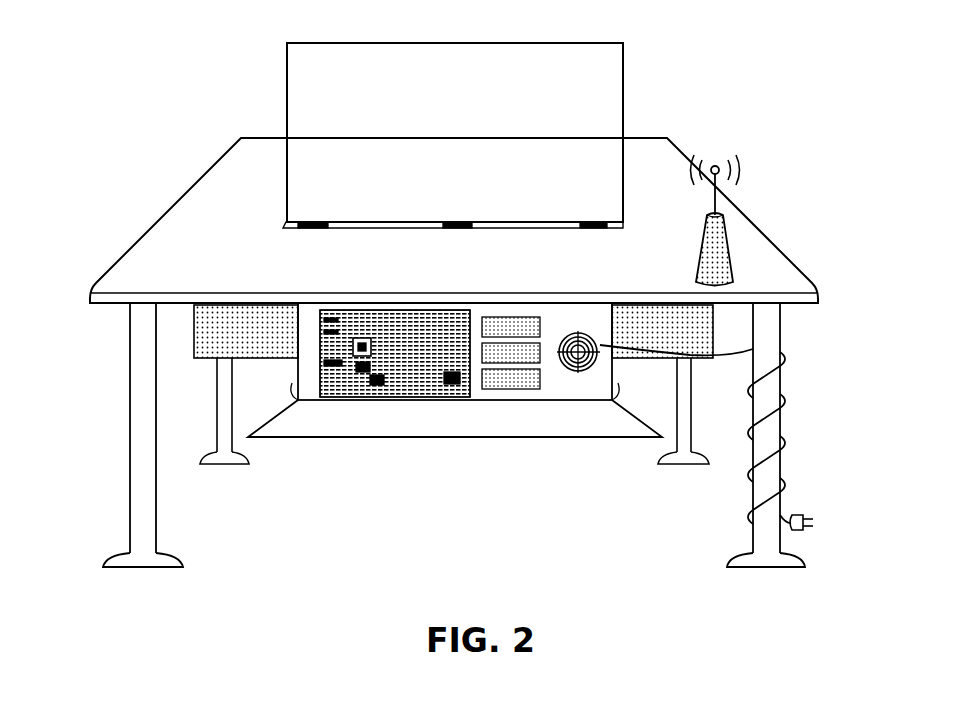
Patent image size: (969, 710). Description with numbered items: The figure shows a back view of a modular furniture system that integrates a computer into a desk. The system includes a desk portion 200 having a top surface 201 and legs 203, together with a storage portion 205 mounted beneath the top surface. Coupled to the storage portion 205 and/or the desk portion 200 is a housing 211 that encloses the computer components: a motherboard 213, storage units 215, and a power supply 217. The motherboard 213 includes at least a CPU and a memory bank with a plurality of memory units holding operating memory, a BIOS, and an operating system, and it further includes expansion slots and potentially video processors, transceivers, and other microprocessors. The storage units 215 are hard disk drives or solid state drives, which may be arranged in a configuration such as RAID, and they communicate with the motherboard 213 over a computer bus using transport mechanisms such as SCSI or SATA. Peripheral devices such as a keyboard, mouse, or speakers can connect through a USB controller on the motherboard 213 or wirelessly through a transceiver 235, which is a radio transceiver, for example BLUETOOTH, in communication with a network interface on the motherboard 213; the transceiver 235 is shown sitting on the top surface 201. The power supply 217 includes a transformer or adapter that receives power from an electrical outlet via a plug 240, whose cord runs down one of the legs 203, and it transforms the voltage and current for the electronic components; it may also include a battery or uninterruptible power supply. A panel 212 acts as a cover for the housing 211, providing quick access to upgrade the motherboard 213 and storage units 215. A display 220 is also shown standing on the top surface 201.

The desk portion 200 is at (454, 220).
The top surface 201 is at (361, 198).
The legs 203 is at (410, 435).
The storage portion 205 is at (374, 339).
The housing 211 is at (327, 365).
The panel 212 is at (455, 462).
The motherboard 213 is at (395, 411).
The storage units 215 is at (548, 414).
The power supply 217 is at (610, 407).
The display monitor 220 is at (409, 135).
The transceiver 235 is at (756, 220).
The plug 240 is at (749, 437).